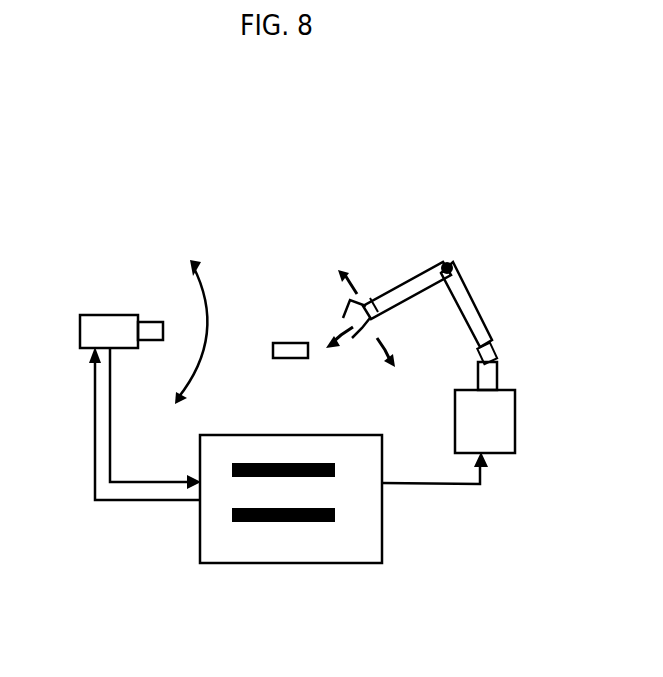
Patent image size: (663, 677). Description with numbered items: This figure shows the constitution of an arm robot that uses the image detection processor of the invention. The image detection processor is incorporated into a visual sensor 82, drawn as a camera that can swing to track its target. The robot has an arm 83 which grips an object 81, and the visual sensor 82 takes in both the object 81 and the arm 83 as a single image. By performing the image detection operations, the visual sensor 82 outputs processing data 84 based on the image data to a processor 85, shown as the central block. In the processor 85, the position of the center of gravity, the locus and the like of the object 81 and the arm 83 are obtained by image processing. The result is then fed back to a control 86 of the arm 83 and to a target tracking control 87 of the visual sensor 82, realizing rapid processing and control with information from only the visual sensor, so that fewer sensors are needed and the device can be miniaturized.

The object 81 is at (298, 358).
The visual sensor 82 is at (95, 312).
The arm 83 is at (397, 292).
The processing data 84 is at (112, 403).
The processor 85 is at (285, 563).
The control 86 is at (447, 486).
The target tracking control 87 is at (93, 432).